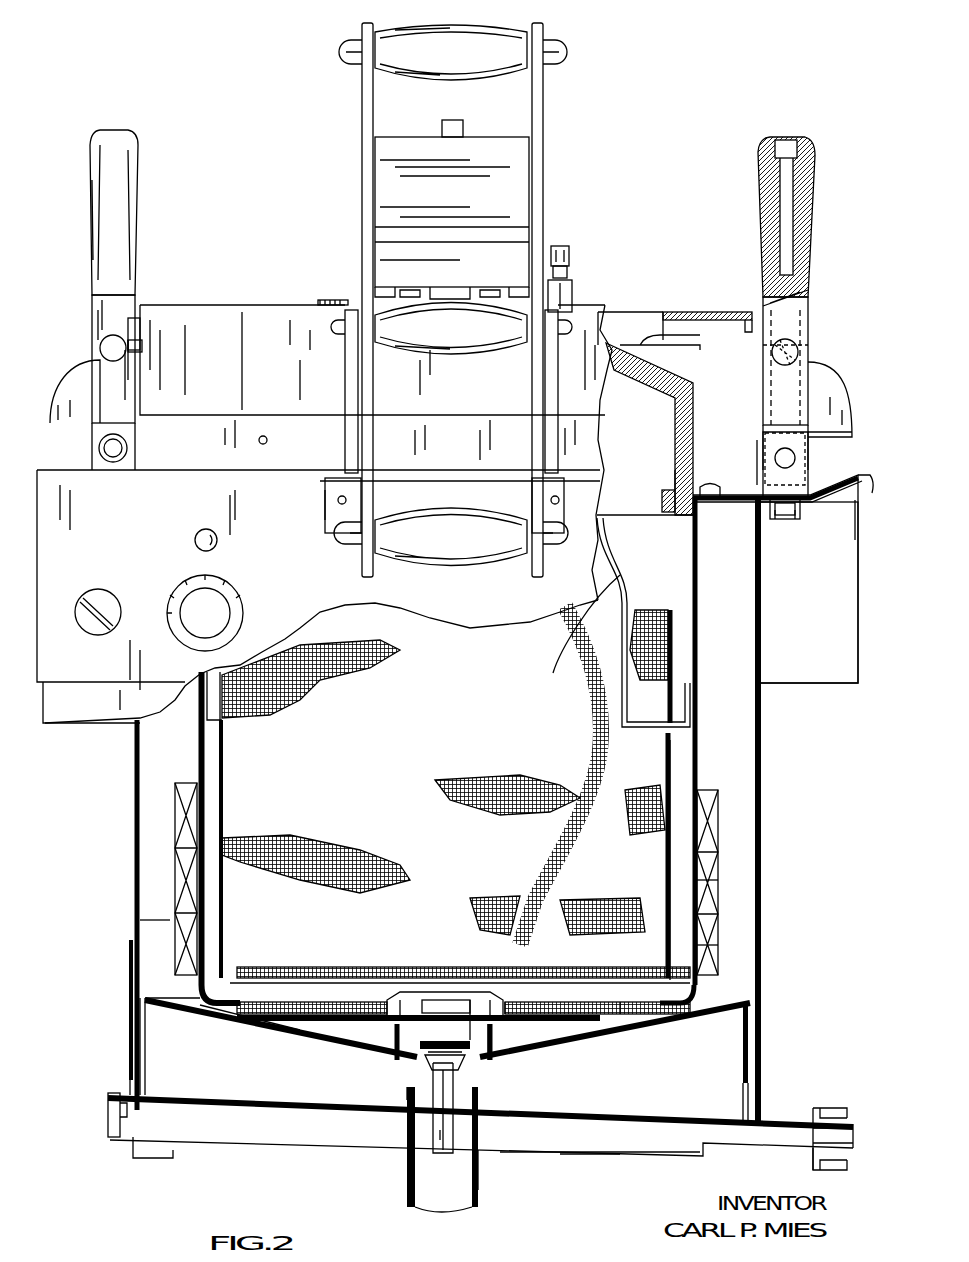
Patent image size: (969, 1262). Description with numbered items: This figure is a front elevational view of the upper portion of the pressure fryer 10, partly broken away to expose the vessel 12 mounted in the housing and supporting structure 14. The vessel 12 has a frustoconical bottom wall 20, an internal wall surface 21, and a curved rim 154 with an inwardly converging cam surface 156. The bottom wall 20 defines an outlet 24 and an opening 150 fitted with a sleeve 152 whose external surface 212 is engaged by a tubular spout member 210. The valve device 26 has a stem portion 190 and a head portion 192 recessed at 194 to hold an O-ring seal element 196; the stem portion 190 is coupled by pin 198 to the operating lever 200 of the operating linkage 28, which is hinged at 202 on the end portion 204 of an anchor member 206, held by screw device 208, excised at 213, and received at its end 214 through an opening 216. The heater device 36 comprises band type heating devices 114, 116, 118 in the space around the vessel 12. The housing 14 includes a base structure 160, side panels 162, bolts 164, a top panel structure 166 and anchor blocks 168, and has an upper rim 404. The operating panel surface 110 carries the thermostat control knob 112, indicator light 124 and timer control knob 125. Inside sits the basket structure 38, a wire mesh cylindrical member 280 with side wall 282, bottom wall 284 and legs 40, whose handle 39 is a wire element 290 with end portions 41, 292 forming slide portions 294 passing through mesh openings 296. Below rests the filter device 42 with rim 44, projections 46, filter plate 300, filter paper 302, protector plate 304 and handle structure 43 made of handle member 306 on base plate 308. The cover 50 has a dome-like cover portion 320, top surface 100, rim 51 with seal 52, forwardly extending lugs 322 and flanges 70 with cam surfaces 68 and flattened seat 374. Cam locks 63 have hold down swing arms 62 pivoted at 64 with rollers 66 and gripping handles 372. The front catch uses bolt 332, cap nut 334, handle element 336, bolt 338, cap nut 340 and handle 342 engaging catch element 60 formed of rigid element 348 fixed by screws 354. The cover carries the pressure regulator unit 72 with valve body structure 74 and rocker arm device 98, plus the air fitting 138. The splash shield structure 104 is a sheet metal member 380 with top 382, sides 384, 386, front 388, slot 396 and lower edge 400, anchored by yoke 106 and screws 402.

The fryer 10 is at (668, 138).
The vessel 12 is at (197, 777).
The housing and supporting structure 14 is at (135, 839).
The bottom wall 20 is at (313, 1037).
The internal wall surface 21 is at (701, 570).
The outlet 24 is at (441, 986).
The valve device 26 is at (431, 1122).
The operating linkage 28 is at (591, 1162).
The heater device 36 is at (162, 923).
The basket structure 38 is at (246, 739).
The handle 39 is at (601, 531).
The legs 40 is at (391, 995).
The end portions 41 is at (691, 716).
The filter device 42 is at (253, 1027).
The handle structure 43 is at (471, 1000).
The rim 44 is at (201, 1011).
The legs or projections 46 is at (332, 1041).
The cover 50 is at (651, 345).
The rim 51 is at (662, 501).
The seal 52 is at (673, 521).
The catch element 60 is at (326, 512).
The hold down swing arms 62 is at (88, 313).
The cam locks 63 is at (447, 313).
The pivot connection 64 is at (823, 430).
The rollers 66 is at (100, 350).
The cam surfaces 68 is at (51, 406).
The flanges 70 is at (71, 425).
The pressure regulator unit 72 is at (360, 137).
The valve body structure 74 is at (512, 196).
The swing or rocker arm device 98 is at (570, 52).
The top surface 100 is at (330, 300).
The splash shield structure 104 is at (609, 313).
The yoke 106 is at (191, 459).
The operating panel surface 110 is at (327, 616).
The thermostat control knob 112 is at (215, 613).
The band type heating device 114 is at (721, 813).
The band type heating device 116 is at (722, 891).
The band type heating device 118 is at (721, 946).
The indicator light 124 is at (196, 540).
The control knob 125 is at (96, 633).
The fitting 138 is at (565, 250).
The opening 150 is at (491, 1059).
The sleeve 152 is at (411, 1101).
The curved rim 154 is at (722, 498).
The cam surface 156 is at (675, 470).
The base structure 160 is at (763, 1026).
The side panels 162 is at (766, 662).
The bolts 164 is at (780, 522).
The top panel structure 166 is at (830, 496).
The anchor blocks 168 is at (806, 522).
The stem portion 190 is at (408, 1192).
The head portion 192 is at (441, 1000).
The recess 194 is at (506, 1020).
The O-ring seal element 196 is at (419, 1063).
The pin 198 is at (456, 1138).
The operating lever 200 is at (662, 1125).
The hinge 202 is at (128, 1081).
The end portion 204 is at (112, 1141).
The anchor member 206 is at (129, 997).
The screw device 208 is at (106, 1106).
The tubular spout member 210 is at (481, 1175).
The external surface 212 is at (361, 1113).
The excised portion 213 is at (483, 1113).
The end 214 is at (837, 1108).
The opening 216 is at (815, 1150).
The cylindrical member 280 is at (674, 613).
The side wall 282 is at (673, 769).
The bottom wall 284 is at (626, 1000).
The wire element 290 is at (554, 672).
The end portions 292 is at (601, 739).
The slide portions 294 is at (659, 734).
The mesh openings 296 is at (668, 721).
The filter plate 300 is at (371, 1026).
The filter paper 302 is at (291, 1000).
The protector plate 304 is at (306, 1002).
The handle member 306 is at (531, 1001).
The base plate 308 is at (522, 1006).
The dome-like cover portion 320 is at (700, 345).
The forwardly extending lugs 322 is at (345, 385).
The bolt 332 is at (338, 328).
The cap nut 334 is at (609, 376).
The handle element 336 is at (385, 308).
The bolt 338 is at (345, 542).
The cap nut 340 is at (557, 546).
The handle 342 is at (451, 565).
The rigid element 348 is at (336, 490).
The screws 354 is at (336, 506).
The gripping handle 372 is at (133, 182).
The flattened seat 374 is at (141, 349).
The sheet metal member 380 is at (197, 306).
The top 382 is at (680, 312).
The side 384 is at (140, 321).
The side 386 is at (801, 302).
The front 388 is at (244, 312).
The slot 396 is at (755, 456).
The lower edge 400 is at (762, 460).
The screws 402 is at (268, 439).
The upper rim 404 is at (857, 501).